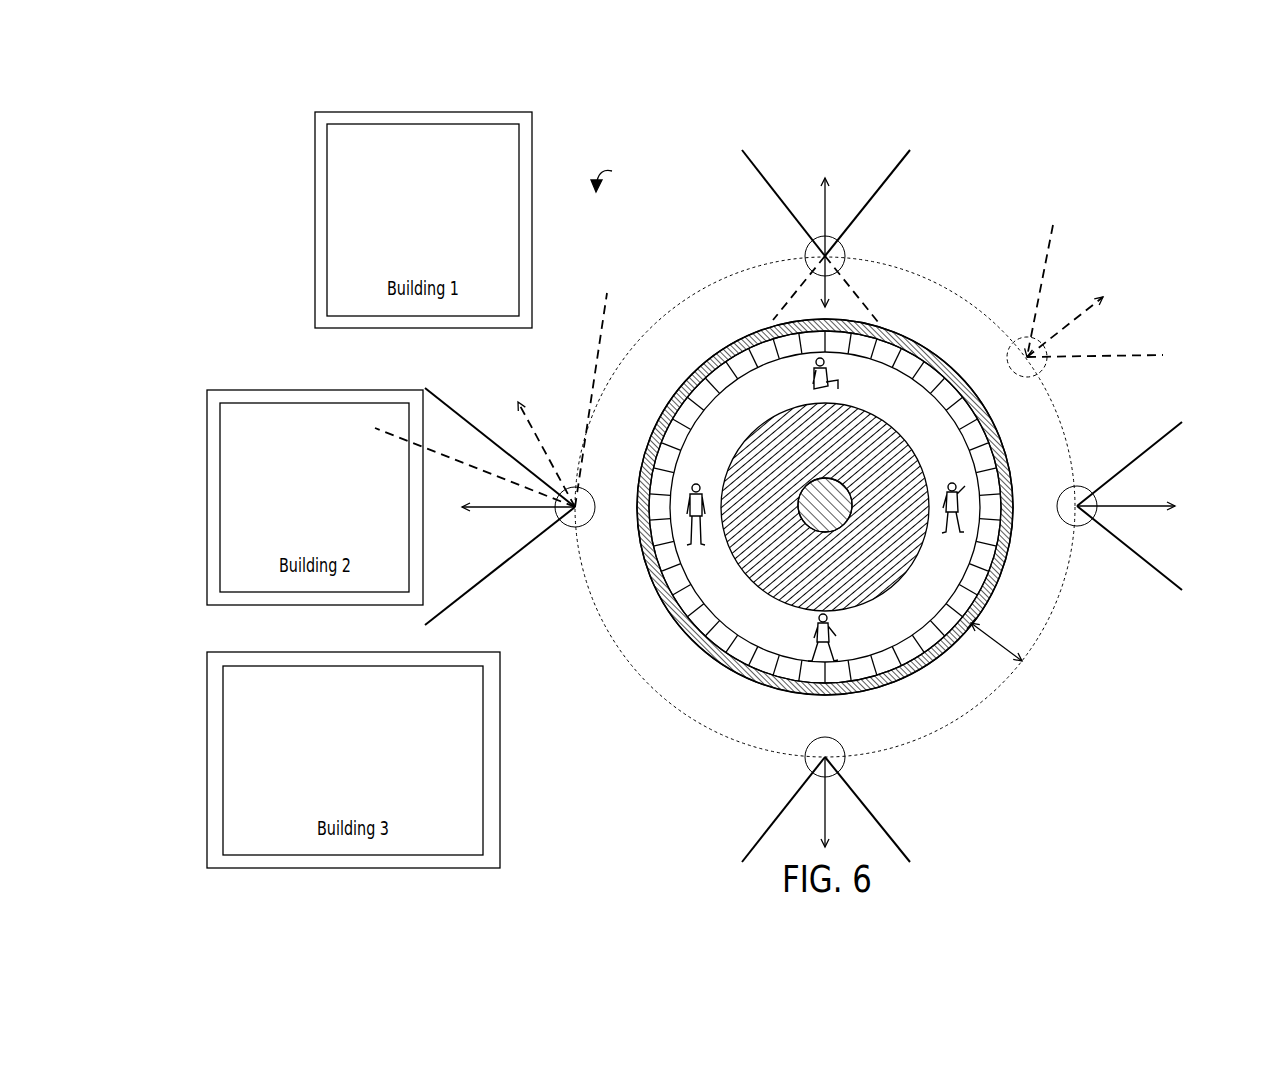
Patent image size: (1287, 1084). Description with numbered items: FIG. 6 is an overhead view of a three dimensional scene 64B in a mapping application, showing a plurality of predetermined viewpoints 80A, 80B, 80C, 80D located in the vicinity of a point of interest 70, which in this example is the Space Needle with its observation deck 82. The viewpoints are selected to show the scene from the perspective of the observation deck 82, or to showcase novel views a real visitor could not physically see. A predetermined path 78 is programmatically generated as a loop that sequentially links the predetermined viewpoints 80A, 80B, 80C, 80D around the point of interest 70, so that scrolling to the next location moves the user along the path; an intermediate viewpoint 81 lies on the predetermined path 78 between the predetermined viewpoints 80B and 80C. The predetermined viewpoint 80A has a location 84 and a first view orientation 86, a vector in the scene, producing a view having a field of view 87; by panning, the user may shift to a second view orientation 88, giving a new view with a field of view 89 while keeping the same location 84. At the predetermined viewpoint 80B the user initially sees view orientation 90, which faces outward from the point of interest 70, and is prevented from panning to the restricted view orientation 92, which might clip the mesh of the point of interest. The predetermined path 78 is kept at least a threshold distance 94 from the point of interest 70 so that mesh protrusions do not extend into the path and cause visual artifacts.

The three dimensional scene 64B is at (619, 177).
The point of interest 70 is at (903, 333).
The predetermined path 78 is at (652, 318).
The predetermined viewpoint 80A is at (508, 459).
The predetermined viewpoint 80B is at (826, 236).
The predetermined viewpoint 80C is at (1080, 486).
The predetermined viewpoint 80D is at (840, 744).
The intermediate viewpoint 81 is at (1082, 313).
The observation deck 82 is at (903, 405).
The location 84 is at (586, 522).
The first view orientation 86 is at (492, 509).
The field of view 87 is at (505, 572).
The second view orientation 88 is at (535, 421).
The field of view 89 is at (603, 321).
The view orientation 90 is at (830, 218).
The restricted view orientation 92 is at (832, 292).
The sensor offset distance 94 is at (990, 637).